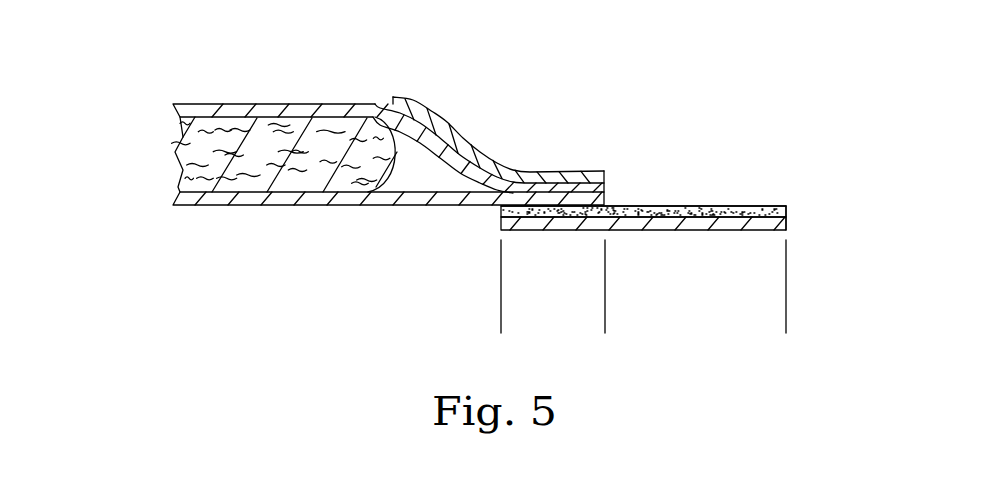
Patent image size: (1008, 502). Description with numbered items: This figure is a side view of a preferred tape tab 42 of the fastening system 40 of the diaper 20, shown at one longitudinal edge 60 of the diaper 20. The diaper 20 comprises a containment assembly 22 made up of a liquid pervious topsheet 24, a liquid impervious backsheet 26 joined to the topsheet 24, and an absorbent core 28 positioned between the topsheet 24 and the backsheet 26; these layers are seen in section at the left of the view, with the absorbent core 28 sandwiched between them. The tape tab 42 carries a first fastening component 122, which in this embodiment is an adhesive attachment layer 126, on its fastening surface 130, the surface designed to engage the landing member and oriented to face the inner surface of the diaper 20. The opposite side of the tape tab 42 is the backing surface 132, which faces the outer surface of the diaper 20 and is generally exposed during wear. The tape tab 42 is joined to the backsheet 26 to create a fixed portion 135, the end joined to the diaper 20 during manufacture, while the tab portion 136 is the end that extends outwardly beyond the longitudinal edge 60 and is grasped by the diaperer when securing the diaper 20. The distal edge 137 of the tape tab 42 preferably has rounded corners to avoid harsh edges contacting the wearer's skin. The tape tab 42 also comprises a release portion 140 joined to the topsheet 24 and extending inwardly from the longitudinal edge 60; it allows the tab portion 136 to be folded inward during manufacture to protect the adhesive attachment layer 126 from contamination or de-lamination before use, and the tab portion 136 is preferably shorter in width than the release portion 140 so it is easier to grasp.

The diaper 20 is at (317, 78).
The containment assembly 22 is at (147, 132).
The liquid pervious topsheet 24 is at (217, 108).
The liquid impervious backsheet 26 is at (263, 202).
The absorbent core 28 is at (175, 153).
The fastening system 40 is at (567, 168).
The tape tab 42 is at (534, 147).
The longitudinal edge 60 is at (607, 188).
The release portion 140 is at (442, 118).
The fastening surface 130 is at (728, 205).
The first fastening component 122 is at (772, 205).
The adhesive attachment layer 126 is at (715, 186).
The backing surface 132 is at (687, 231).
The distal edge 137 is at (787, 222).
The fixed portion 135 is at (605, 316).
The tab portion 136 is at (786, 316).